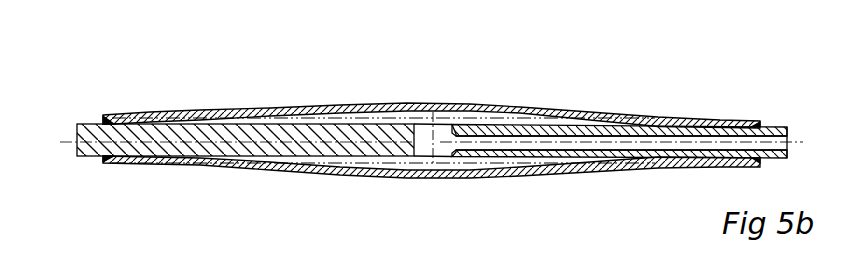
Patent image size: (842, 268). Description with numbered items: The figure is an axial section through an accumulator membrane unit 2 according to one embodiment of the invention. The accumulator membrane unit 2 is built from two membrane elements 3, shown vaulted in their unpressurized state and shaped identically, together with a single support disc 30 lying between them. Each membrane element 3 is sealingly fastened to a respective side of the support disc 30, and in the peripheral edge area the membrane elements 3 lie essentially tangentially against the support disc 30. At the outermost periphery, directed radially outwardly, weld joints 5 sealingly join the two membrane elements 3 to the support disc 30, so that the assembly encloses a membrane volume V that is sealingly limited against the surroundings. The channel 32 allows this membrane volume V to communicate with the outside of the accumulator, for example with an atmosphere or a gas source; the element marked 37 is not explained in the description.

The accumulator membrane unit 2 is at (345, 58).
The membrane element 3 is at (538, 107).
The weld joint 5 is at (102, 117).
The support disc 30 is at (88, 141).
The channel 32 is at (620, 143).
The end face of inner rod 37 is at (447, 157).
The membrane volume V is at (405, 161).